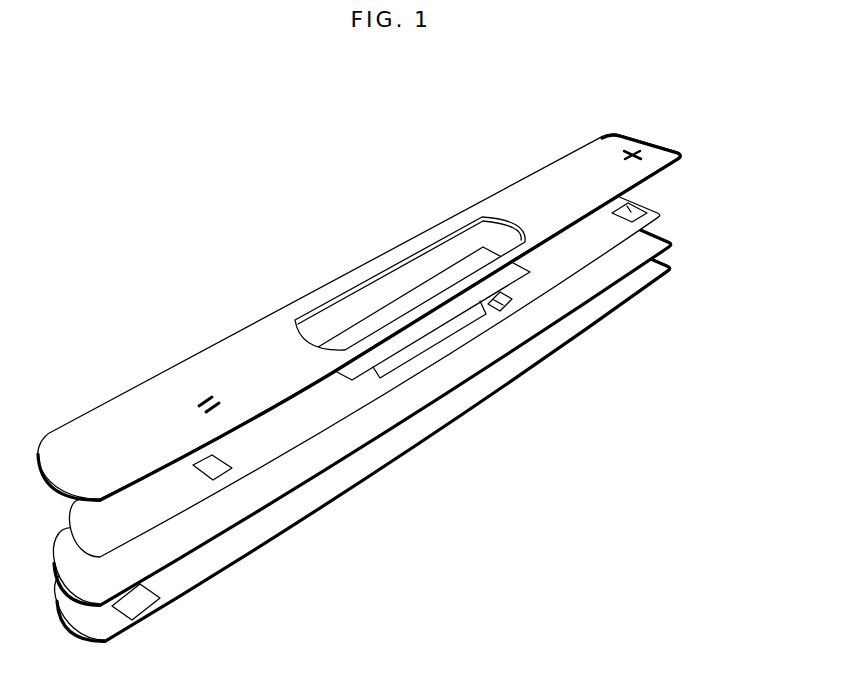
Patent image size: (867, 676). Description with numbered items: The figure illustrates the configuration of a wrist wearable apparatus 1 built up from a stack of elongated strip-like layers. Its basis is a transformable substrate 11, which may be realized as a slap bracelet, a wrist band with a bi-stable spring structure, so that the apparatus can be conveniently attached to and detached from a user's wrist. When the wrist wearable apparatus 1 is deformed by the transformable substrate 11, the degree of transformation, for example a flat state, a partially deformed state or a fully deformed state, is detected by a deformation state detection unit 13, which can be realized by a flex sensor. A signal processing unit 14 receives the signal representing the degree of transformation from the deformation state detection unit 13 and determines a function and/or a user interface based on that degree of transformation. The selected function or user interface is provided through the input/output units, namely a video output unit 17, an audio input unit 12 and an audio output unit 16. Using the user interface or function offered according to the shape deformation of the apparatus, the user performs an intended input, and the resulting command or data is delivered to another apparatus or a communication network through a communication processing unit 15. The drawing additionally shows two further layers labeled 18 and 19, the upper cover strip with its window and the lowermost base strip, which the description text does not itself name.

The wrist wearable apparatus 1 is at (406, 345).
The transformable substrate 11 is at (650, 238).
The audio input unit 12 is at (214, 467).
The deformation state detection unit 13 is at (283, 435).
The signal processing unit 14 is at (427, 352).
The communication processing unit 15 is at (503, 303).
The audio output unit 16 is at (640, 206).
The video output unit 17 is at (390, 308).
The upper cover 18 is at (572, 168).
The base layer 19 is at (658, 268).